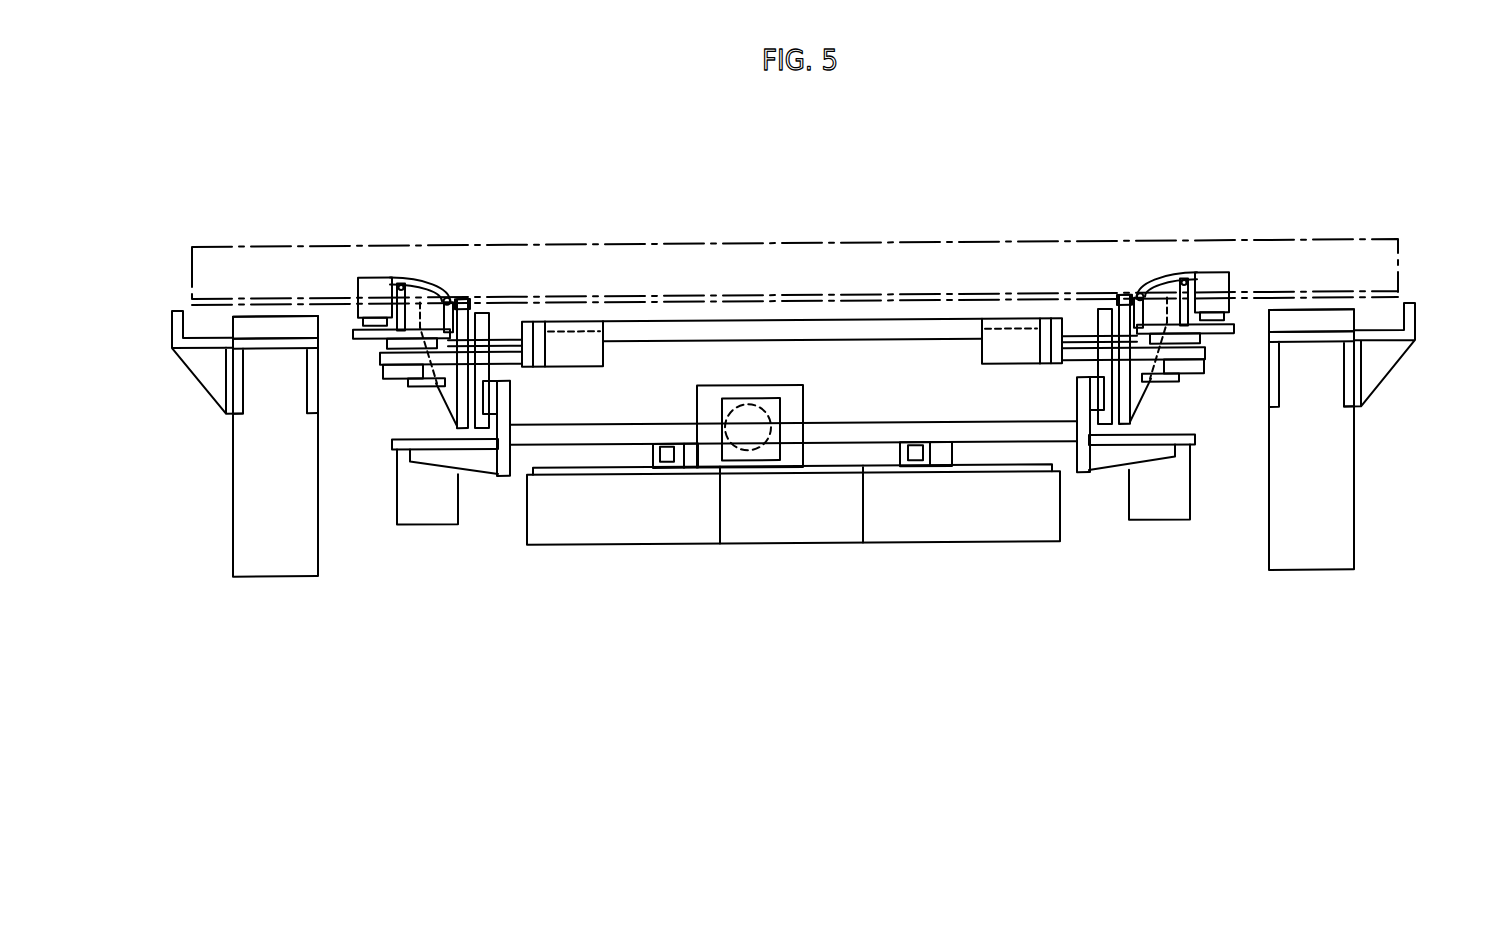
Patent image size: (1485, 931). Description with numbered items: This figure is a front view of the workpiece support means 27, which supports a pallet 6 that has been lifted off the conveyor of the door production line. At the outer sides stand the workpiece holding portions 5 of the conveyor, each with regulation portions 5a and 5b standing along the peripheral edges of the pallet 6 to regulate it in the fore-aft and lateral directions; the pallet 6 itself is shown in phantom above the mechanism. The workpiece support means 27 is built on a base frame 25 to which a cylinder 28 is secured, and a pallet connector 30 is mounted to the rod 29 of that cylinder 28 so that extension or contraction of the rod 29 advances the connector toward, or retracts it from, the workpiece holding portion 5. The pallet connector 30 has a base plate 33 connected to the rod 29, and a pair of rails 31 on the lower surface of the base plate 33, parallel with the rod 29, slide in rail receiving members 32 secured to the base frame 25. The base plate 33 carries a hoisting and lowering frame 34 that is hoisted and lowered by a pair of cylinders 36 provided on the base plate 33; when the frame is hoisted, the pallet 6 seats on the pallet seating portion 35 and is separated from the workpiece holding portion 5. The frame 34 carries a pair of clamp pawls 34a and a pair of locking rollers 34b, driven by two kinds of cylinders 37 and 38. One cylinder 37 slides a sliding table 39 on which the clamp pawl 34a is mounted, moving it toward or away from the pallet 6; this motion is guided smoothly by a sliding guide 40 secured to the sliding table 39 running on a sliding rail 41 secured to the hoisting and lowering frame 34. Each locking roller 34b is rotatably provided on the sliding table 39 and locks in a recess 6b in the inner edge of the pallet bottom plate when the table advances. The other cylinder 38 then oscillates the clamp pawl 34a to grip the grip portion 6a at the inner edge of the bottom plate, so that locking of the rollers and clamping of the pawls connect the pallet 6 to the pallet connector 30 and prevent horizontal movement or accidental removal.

The workpiece holding portion 5 is at (233, 456).
The regulation portion 5a is at (262, 313).
The regulation portion 5b is at (172, 316).
The pallet 6 is at (1340, 247).
The grip portion 6a is at (355, 322).
The recess 6b is at (358, 295).
The base frame 25 is at (1061, 541).
The workpiece support means 27 is at (968, 194).
The cylinder 28 is at (748, 385).
The rod 29 is at (780, 404).
The pallet connector 30 is at (660, 284).
The rail 31 is at (667, 461).
The rail receiving member 32 is at (653, 460).
The base plate 33 is at (645, 423).
The hoisting and lowering frame 34 is at (869, 320).
The clamp pawl 34a is at (413, 274).
The locking roller 34b is at (372, 275).
The pallet seating portion 35 is at (465, 297).
The cylinder 36 is at (397, 500).
The cylinder 37 is at (568, 366).
The cylinder 38 is at (383, 376).
The sliding table 39 is at (356, 312).
The sliding guide 40 is at (387, 342).
The sliding rail 41 is at (382, 355).